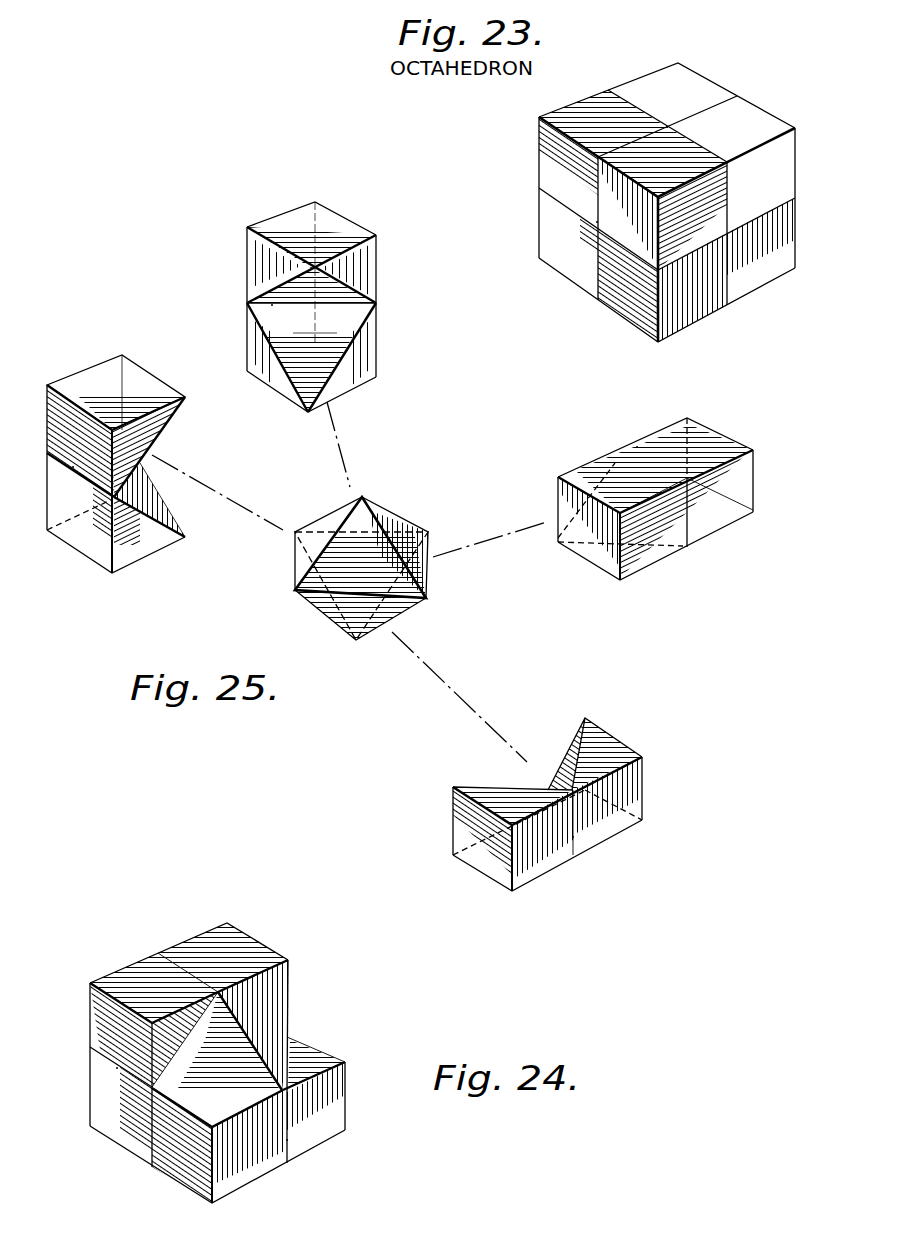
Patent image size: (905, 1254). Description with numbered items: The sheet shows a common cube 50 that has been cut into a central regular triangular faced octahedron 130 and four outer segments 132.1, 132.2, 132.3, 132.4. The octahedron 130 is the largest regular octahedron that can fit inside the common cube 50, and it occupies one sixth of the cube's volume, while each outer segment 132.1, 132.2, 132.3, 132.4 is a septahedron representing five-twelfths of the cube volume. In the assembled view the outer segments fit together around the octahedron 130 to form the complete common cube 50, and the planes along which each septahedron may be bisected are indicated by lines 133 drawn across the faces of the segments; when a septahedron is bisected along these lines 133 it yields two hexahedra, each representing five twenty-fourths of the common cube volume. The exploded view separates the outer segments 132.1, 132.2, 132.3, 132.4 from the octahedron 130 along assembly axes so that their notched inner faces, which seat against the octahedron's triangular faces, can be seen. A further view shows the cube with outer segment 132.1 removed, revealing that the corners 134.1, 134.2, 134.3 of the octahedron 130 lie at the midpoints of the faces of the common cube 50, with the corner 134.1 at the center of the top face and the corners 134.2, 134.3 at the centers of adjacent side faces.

In FIG. 23, the common cube 50 is at (752, 85).
In FIG. 25, the regular triangular faced octahedron 130 is at (438, 597).
In FIG. 24, the regular triangular faced octahedron 130 is at (273, 1045).
In FIG. 25, the outer segment 132.1 is at (378, 273).
In FIG. 23, the outer segment 132.2 is at (548, 170).
In FIG. 25, the outer segment 132.2 is at (140, 365).
In FIG. 24, the outer segment 132.2 is at (132, 973).
In FIG. 23, the outer segment 132.3 is at (785, 172).
In FIG. 25, the outer segment 132.3 is at (708, 537).
In FIG. 25, the outer segment 132.4 is at (531, 895).
In FIG. 24, the outer segment 132.4 is at (260, 1165).
In FIG. 23, the bisecting lines 133 is at (727, 283).
In FIG. 25, the bisecting lines 133 is at (272, 305).
In FIG. 24, the bisecting lines 133 is at (117, 1068).
In FIG. 23, the octahedron corner 134.1 is at (667, 127).
In FIG. 24, the octahedron corner 134.1 is at (218, 992).
In FIG. 25, the octahedron corner 134.2 is at (427, 600).
In FIG. 23, the octahedron corner 134.3 is at (595, 222).
In FIG. 25, the octahedron corner 134.3 is at (295, 590).